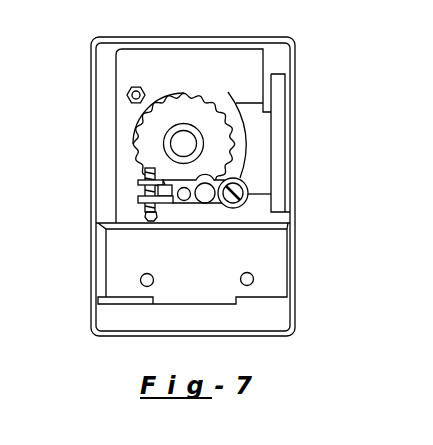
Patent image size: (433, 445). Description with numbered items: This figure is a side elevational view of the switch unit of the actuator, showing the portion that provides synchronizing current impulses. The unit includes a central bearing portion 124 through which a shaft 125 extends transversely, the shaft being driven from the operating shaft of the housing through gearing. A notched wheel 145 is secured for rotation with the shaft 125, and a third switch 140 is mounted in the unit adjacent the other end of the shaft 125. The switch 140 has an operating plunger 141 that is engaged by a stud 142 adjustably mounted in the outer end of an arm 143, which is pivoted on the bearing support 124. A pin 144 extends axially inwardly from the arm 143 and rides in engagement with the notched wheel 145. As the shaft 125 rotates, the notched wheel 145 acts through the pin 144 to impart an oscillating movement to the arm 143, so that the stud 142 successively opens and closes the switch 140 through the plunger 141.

The central bearing portion 124 is at (131, 145).
The shaft 125 is at (184, 142).
The third switch 140 is at (207, 292).
The operating plunger 141 is at (145, 218).
The stud 142 is at (140, 190).
The arm 143 is at (208, 203).
The pin 144 is at (185, 201).
The notched wheel 145 is at (168, 100).